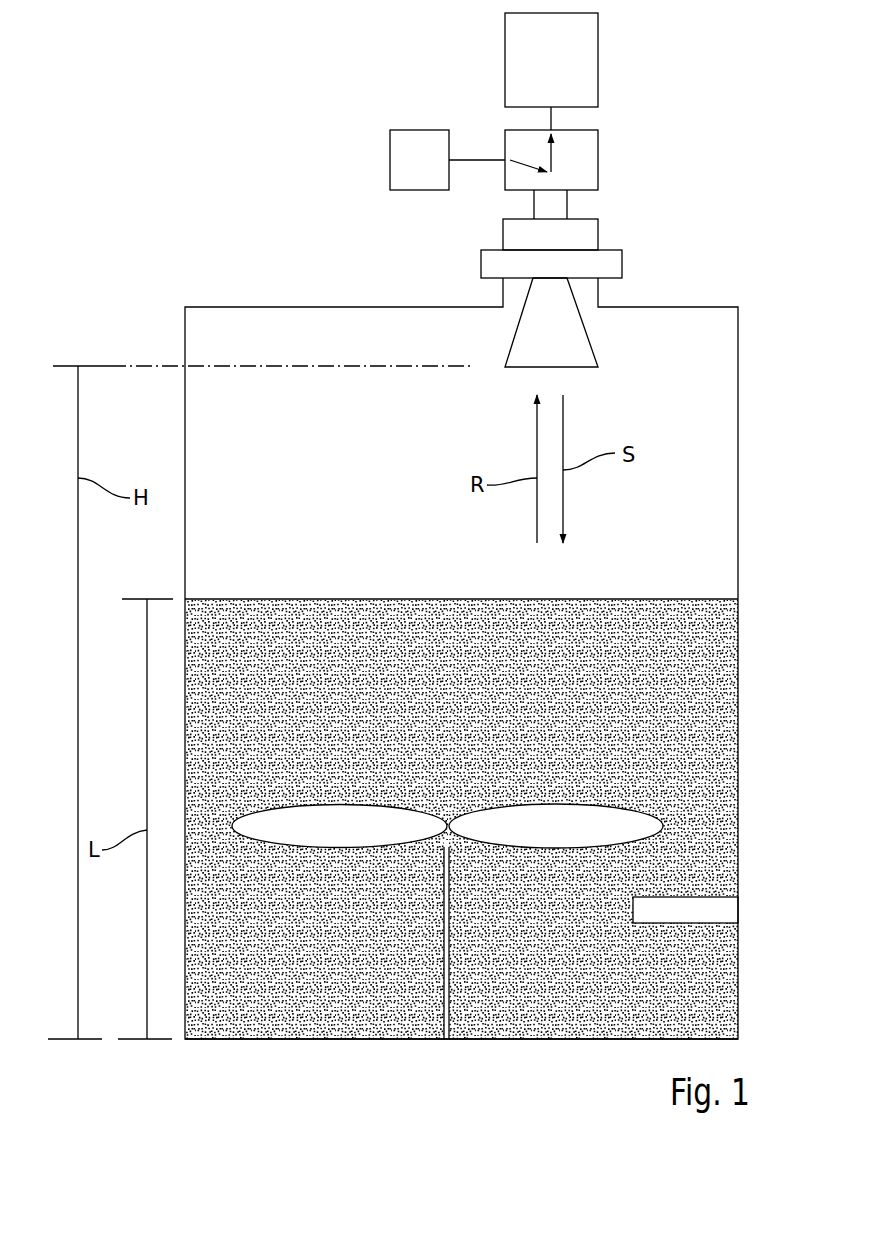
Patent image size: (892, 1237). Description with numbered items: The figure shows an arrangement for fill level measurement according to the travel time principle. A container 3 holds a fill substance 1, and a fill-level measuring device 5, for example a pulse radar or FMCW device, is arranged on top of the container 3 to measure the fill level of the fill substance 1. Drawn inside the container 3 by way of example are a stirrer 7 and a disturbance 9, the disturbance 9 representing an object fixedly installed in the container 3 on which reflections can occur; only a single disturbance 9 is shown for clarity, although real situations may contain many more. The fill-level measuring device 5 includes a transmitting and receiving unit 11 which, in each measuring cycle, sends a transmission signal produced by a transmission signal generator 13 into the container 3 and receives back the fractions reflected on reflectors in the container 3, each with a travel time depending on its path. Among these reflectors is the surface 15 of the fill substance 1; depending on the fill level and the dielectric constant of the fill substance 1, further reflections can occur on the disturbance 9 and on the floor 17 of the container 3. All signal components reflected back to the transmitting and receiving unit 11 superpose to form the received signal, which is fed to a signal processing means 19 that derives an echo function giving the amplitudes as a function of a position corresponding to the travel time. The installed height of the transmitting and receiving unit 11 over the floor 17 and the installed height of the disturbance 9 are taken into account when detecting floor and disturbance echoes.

The fill substance 1 is at (362, 947).
The container 3 is at (738, 540).
The fill-level measuring device 5 is at (338, 175).
The stirrer 7 is at (553, 837).
The disturbance 9 is at (728, 910).
The transmitting and receiving unit 11 is at (580, 337).
The transmission signal generator 13 is at (408, 172).
The surface 15 is at (225, 598).
The floor 17 is at (280, 1040).
The signal processing means 19 is at (563, 70).